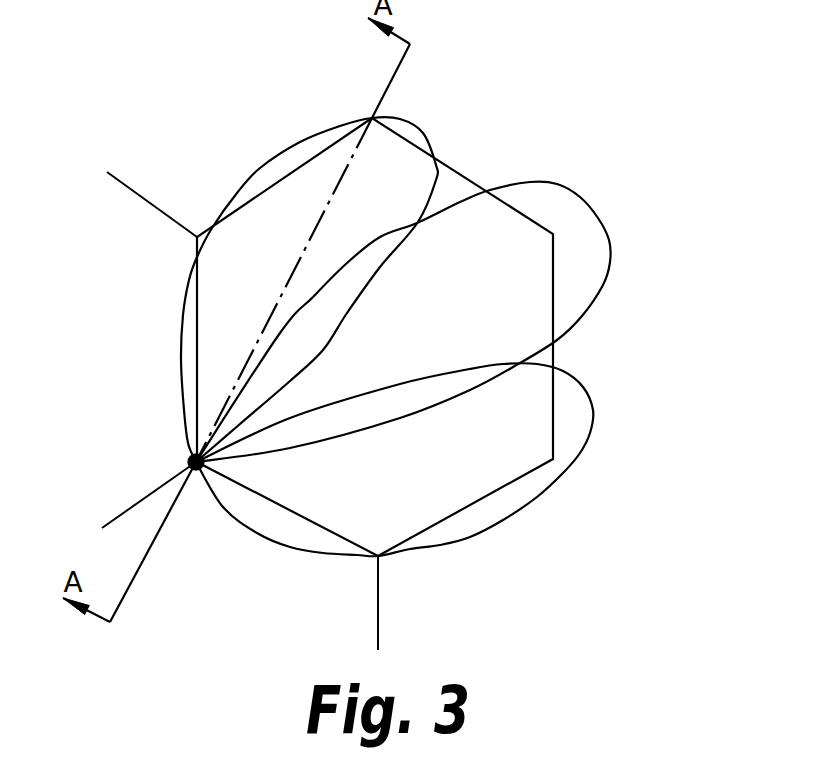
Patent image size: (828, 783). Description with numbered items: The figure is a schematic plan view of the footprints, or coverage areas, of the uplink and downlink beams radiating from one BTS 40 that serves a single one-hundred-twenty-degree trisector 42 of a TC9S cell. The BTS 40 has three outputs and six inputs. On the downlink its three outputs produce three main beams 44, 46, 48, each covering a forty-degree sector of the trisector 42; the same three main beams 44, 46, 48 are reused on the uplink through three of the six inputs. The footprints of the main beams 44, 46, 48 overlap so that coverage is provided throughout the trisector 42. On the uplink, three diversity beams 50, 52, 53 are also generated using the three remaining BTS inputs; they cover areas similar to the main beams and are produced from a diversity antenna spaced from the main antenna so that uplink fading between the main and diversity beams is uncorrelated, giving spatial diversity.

The IS-95 BTS 40 is at (185, 457).
The trisector 42 is at (433, 527).
The main beam 44 is at (309, 283).
The main beam 46 is at (450, 322).
The main beam 48 is at (410, 459).
The diversity beam 50 is at (259, 171).
The diversity beam 52 is at (594, 213).
The diversity beam 53 is at (506, 521).